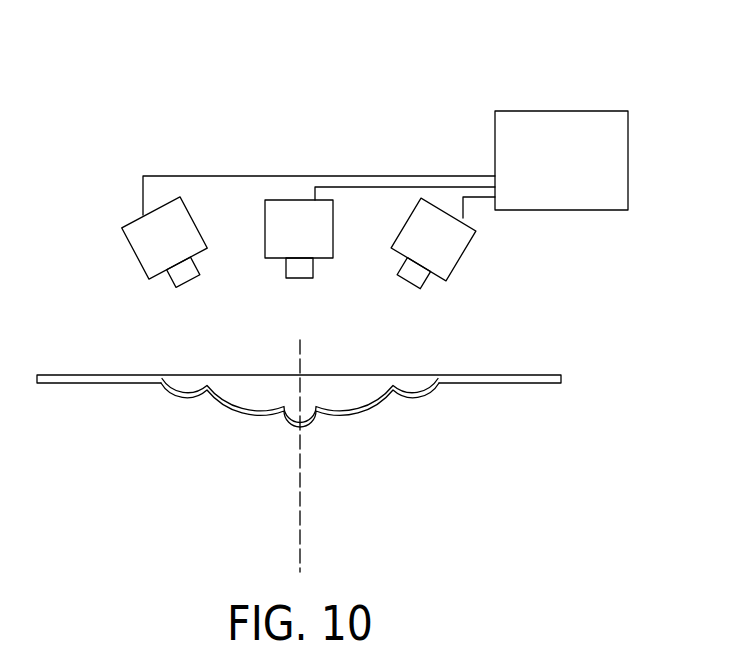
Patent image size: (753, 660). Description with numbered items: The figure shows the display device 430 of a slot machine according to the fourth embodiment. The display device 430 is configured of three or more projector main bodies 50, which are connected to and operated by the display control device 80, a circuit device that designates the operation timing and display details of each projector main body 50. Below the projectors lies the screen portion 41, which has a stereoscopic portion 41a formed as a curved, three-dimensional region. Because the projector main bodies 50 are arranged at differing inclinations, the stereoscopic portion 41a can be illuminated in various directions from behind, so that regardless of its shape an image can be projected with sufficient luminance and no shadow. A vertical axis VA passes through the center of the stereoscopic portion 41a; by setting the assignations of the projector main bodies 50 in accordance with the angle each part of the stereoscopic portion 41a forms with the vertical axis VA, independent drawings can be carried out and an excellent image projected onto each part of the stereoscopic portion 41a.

The display device 430 is at (317, 100).
The projector main body 50 is at (161, 202).
The display control device 80 is at (558, 118).
The screen portion 41 is at (299, 408).
The stereoscopic portion 41a is at (362, 412).
The vertical axis VA is at (300, 512).